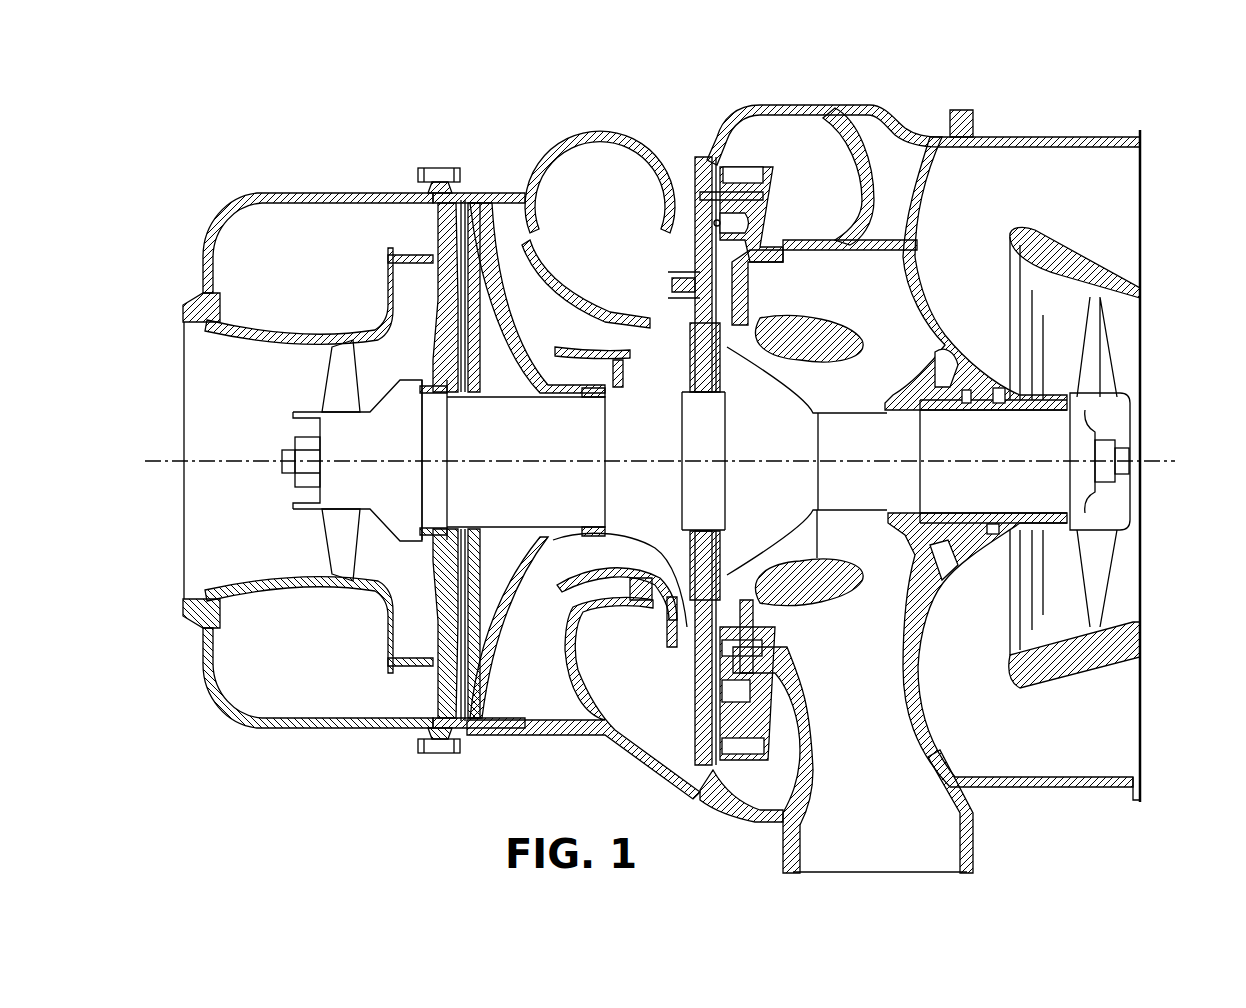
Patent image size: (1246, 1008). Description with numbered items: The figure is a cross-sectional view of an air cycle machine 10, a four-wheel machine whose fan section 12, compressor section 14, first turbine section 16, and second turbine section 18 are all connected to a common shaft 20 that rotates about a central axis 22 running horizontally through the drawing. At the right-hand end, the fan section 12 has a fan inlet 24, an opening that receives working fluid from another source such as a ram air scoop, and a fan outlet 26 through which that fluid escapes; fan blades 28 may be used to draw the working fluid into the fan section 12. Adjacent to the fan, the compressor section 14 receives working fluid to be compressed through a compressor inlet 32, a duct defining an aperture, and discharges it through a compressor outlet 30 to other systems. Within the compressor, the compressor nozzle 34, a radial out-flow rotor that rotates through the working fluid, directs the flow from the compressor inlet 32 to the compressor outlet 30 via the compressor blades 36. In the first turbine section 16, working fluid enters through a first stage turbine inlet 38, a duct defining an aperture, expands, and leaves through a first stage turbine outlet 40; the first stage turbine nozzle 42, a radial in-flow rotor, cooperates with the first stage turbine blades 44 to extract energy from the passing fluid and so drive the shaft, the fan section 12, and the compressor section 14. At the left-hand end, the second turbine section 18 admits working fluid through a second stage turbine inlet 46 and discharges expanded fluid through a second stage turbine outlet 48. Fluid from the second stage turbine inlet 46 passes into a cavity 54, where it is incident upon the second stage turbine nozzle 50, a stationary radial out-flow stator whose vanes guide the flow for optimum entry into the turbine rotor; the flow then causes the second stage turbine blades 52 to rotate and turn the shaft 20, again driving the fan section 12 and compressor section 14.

The air cycle machine 10 is at (282, 770).
The fan section 12 is at (1055, 108).
The compressor section 14 is at (795, 88).
The first turbine section 16 is at (596, 118).
The second turbine section 18 is at (338, 183).
The shaft 20 is at (913, 444).
The central axis 22 is at (1172, 461).
The fan inlet 24 is at (1160, 210).
The fan outlet 26 is at (717, 223).
The fan blades 28 is at (1105, 330).
The compressor outlet 30 is at (893, 784).
The compressor inlet 32 is at (823, 165).
The compressor nozzle 34 is at (700, 755).
The compressor blades 36 is at (800, 392).
The first stage turbine inlet 38 is at (652, 680).
The first stage turbine outlet 40 is at (532, 303).
The first stage turbine nozzle 42 is at (692, 283).
The first stage turbine blades 44 is at (648, 385).
The second stage turbine inlet 46 is at (308, 274).
The second stage turbine outlet 48 is at (233, 392).
The second stage turbine nozzle 50 is at (443, 296).
The second stage turbine blades 52 is at (358, 404).
The cavity 54 is at (467, 200).